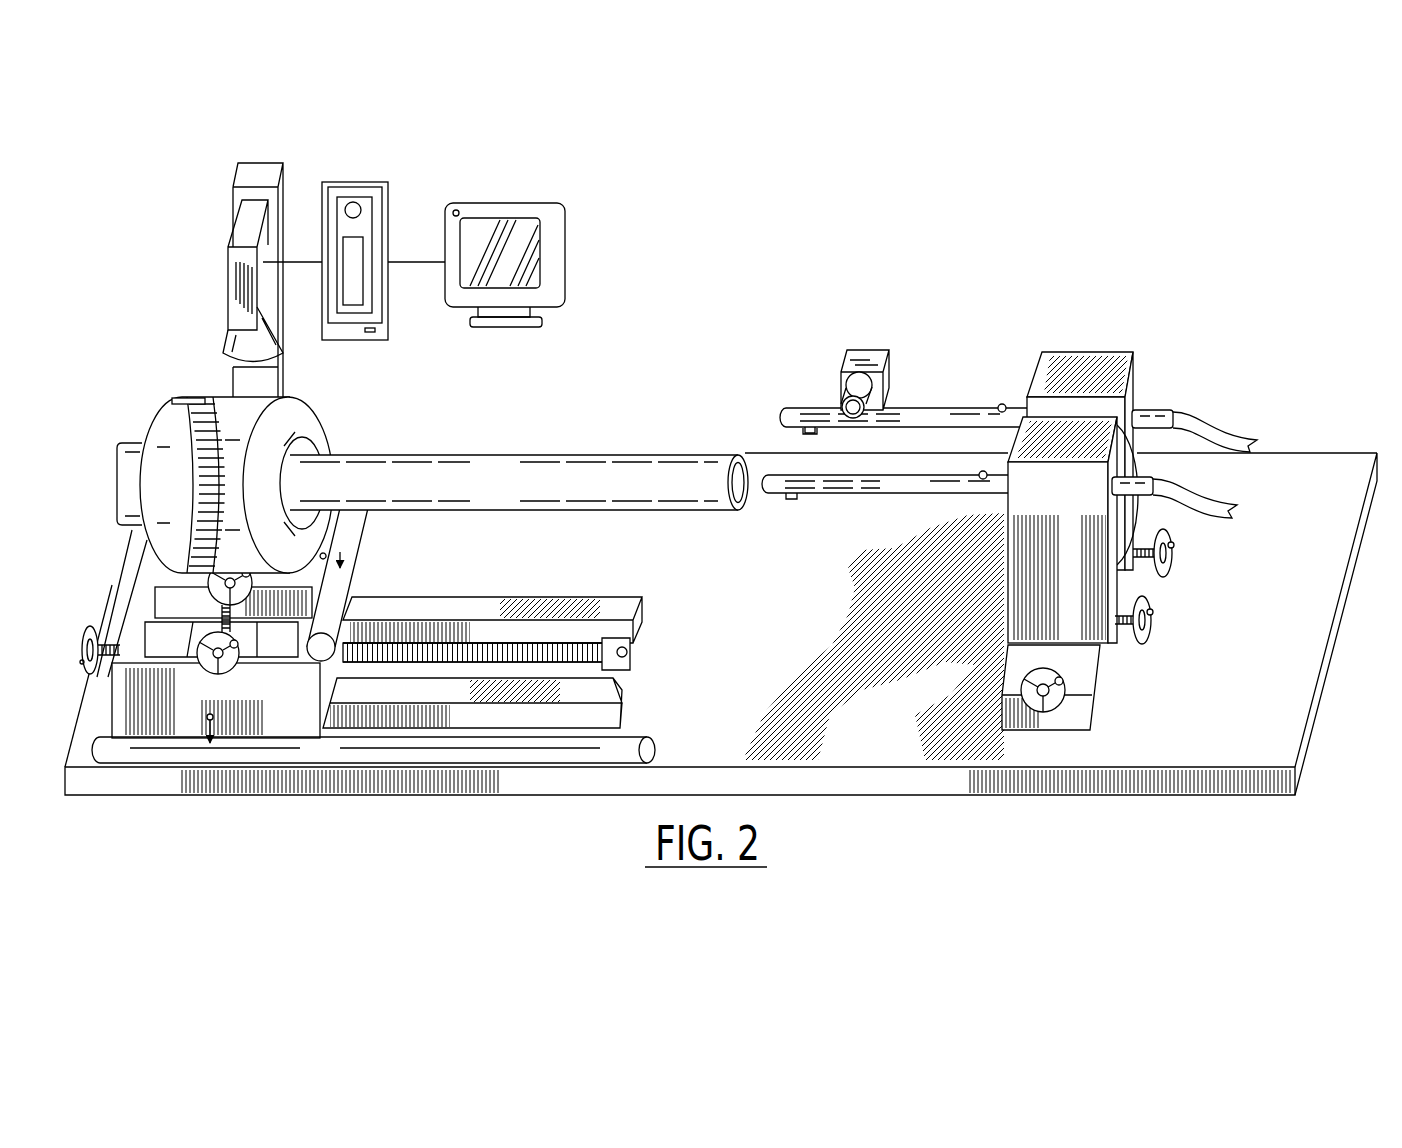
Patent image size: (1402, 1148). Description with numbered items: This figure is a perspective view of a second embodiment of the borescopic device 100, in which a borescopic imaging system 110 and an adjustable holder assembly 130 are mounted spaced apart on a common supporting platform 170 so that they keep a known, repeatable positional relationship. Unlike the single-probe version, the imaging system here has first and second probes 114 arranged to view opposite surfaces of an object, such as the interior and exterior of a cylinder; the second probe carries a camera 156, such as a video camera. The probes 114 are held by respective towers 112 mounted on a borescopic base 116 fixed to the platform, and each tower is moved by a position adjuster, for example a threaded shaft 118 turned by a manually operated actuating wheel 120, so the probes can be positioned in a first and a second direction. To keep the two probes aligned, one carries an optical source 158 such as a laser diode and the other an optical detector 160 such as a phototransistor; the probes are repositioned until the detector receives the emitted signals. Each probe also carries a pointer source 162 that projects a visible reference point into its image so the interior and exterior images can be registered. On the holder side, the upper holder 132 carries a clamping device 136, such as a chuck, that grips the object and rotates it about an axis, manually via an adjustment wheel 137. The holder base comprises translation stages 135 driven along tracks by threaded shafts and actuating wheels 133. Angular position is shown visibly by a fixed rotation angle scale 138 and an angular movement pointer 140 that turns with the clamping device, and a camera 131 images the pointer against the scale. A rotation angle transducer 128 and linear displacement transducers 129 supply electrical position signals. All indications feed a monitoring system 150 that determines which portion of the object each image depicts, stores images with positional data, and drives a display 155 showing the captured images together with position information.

The borescopic device 100 is at (721, 511).
The borescopic imaging system 110 is at (1099, 502).
The tower 112 is at (1082, 360).
The probe 114 is at (755, 446).
The borescopic base 116 is at (1095, 683).
The threaded shaft 118 is at (565, 645).
The actuating wheel 120 is at (1153, 627).
The rotation angle transducer 128 is at (153, 445).
The linear displacement transducer 129 is at (358, 562).
The adjustable holder assembly 130 is at (342, 430).
The camera 131 is at (248, 222).
The upper holder 132 is at (272, 424).
The actuating wheel 133 is at (95, 632).
The translation stage 135 is at (350, 600).
The clamping device 136 is at (300, 527).
The adjustment wheel 137 is at (163, 598).
The rotation angle scale 138 is at (231, 390).
The angular movement pointer 140 is at (203, 397).
The monitoring system 150 is at (388, 312).
The display 155 is at (553, 273).
The camera 156 is at (862, 352).
The optical source 158 is at (976, 510).
The optical detector 160 is at (1004, 398).
The pointer source 162 is at (812, 434).
The supporting platform 170 is at (1310, 727).